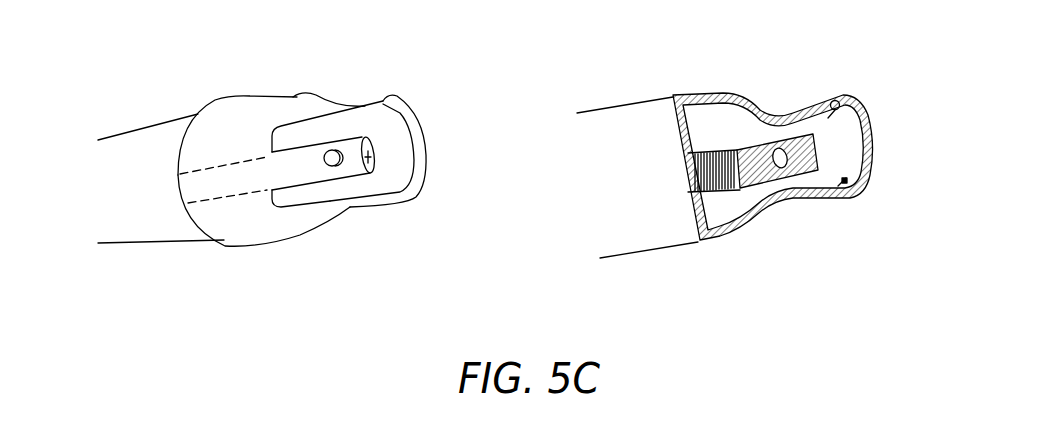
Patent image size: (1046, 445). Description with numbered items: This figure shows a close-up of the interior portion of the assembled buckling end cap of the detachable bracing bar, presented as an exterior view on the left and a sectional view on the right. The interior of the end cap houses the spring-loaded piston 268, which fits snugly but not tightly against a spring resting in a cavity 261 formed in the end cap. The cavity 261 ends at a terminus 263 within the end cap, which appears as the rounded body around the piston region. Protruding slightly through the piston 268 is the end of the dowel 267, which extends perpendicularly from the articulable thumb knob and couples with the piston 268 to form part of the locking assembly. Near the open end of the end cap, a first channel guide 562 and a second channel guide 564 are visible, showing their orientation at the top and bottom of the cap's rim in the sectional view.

The cavity 261 is at (233, 197).
The terminus 263 is at (200, 147).
The dowel 267 is at (325, 157).
The spring-articulated piston 268 is at (300, 178).
The first channel guide 562 is at (845, 92).
The second channel guide 564 is at (843, 182).